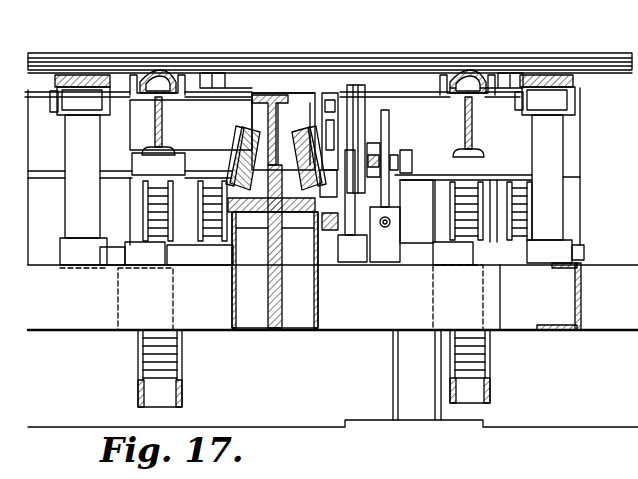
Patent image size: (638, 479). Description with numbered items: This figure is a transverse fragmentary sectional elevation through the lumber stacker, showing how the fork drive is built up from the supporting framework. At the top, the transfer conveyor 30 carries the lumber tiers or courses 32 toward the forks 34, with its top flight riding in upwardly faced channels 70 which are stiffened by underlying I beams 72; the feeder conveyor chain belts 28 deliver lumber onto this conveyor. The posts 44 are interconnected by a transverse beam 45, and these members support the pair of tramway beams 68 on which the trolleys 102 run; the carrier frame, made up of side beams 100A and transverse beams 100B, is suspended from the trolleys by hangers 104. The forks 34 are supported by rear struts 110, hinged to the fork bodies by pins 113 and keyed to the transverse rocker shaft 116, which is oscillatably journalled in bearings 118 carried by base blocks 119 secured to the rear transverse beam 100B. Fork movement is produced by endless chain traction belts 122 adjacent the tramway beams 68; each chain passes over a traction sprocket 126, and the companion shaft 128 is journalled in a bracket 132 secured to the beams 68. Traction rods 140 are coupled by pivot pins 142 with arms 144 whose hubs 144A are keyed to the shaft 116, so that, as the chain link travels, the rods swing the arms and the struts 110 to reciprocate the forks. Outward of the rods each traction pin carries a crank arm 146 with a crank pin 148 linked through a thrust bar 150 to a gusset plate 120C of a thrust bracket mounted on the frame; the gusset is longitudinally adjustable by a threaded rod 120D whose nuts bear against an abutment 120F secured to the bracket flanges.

The feeder conveyor chain belts 28 is at (210, 78).
The transfer conveyor 30 is at (152, 70).
The tiers or courses 32 is at (327, 63).
The forks 34 is at (92, 74).
The posts 44 is at (395, 388).
The transverse beam 45 is at (576, 136).
The tramway beams 68 is at (262, 116).
The upwardly faced channels 70 is at (128, 78).
The I beams 72 is at (162, 116).
The side beams 100A is at (580, 289).
The transverse beams 100B is at (132, 313).
The trolleys 102 is at (232, 148).
The hangers 104 is at (255, 279).
The rear struts 110 is at (80, 140).
The pins 113 is at (53, 100).
The rocker shaft 116 is at (117, 162).
The bearings 118 is at (137, 255).
The base blocks 119 is at (118, 306).
The gusset plate 120C is at (389, 127).
The threaded rod 120D is at (387, 228).
The abutment 120F is at (396, 180).
The endless chain traction belts 122 is at (282, 237).
The traction sprocket 126 is at (338, 226).
The shaft 128 is at (322, 117).
The bracket 132 is at (272, 96).
The traction rods 140 is at (350, 95).
The pivot pins 142 is at (630, 204).
The arms 144 is at (350, 128).
The hubs 144A is at (347, 250).
The crank arm 146 is at (385, 143).
The crank pins 148 is at (398, 166).
The thrust bars 150 is at (395, 153).